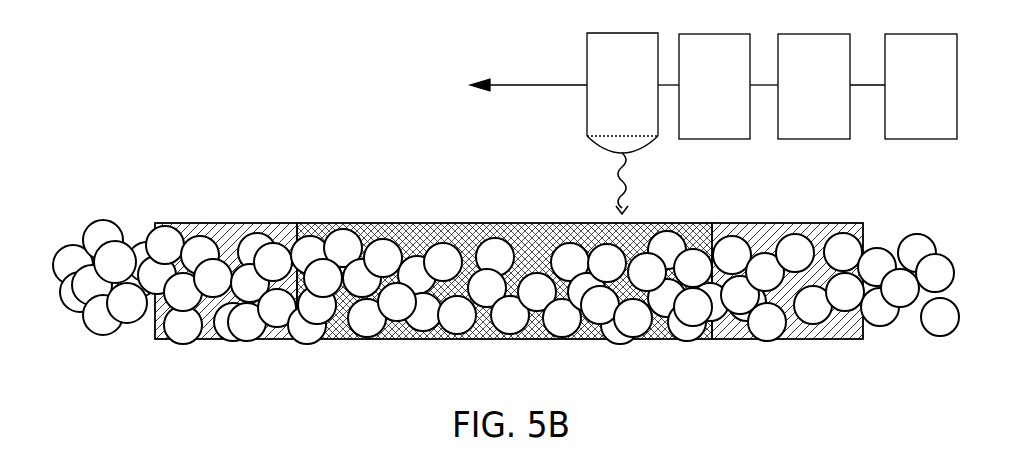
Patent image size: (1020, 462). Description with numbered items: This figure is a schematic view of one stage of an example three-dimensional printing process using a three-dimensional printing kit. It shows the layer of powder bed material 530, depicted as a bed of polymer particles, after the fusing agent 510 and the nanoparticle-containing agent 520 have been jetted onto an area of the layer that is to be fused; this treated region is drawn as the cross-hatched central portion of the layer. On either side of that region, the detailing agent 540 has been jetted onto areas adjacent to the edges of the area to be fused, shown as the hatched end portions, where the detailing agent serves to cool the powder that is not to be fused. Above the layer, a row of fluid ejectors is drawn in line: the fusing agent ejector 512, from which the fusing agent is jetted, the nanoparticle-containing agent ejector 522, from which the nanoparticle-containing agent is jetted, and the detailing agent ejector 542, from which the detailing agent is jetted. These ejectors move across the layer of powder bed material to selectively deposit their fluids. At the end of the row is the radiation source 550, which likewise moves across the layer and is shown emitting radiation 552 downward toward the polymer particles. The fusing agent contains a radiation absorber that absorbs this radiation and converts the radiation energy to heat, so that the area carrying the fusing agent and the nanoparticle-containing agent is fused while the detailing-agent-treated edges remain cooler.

The fusing agent 510 is at (400, 240).
The nanoparticle-containing agent 520 is at (548, 284).
The layer of powder bed material 530 is at (102, 240).
The detailing agent 540 is at (283, 222).
The radiation source 550 is at (642, 98).
The radiation 552 is at (612, 200).
The detailing agent ejector 542 is at (734, 98).
The nanoparticle-containing agent ejector 522 is at (834, 98).
The fusing agent ejector 512 is at (941, 98).